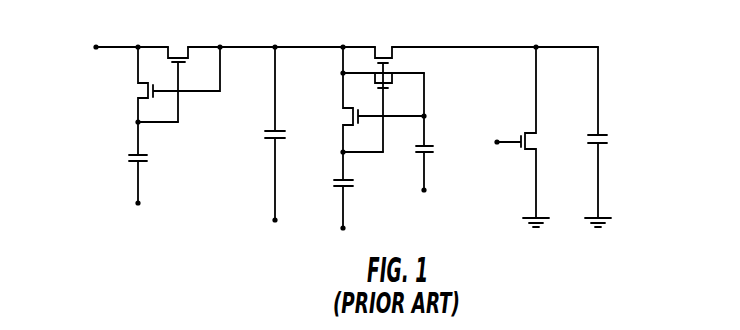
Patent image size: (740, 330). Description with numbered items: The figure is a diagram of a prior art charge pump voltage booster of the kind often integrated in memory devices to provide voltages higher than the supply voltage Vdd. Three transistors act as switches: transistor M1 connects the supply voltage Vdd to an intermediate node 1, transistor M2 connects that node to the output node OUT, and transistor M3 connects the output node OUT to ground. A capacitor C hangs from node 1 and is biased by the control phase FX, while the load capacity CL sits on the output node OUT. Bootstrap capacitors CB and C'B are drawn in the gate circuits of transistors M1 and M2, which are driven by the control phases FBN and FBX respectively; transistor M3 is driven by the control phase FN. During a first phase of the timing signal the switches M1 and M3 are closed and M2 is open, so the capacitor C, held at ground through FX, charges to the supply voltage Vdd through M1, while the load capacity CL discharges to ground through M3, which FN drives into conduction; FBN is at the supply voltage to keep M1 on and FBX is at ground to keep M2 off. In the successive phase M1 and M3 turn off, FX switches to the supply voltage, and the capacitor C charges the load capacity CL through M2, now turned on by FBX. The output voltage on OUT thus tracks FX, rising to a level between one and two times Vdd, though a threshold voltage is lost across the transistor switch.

The supply voltage Vdd is at (78, 37).
The transistor M1 is at (178, 73).
The transistor M2 is at (383, 88).
The transistor M3 is at (532, 137).
The bootstrap capacitor CB is at (251, 175).
The second bootstrap capacitor C'B is at (437, 156).
The capacitor C is at (284, 167).
The load capacity CL is at (609, 137).
The intermediate node 1 is at (280, 76).
The output voltage node OUT is at (550, 36).
The control phase FBN is at (119, 212).
The control phase FX is at (263, 232).
The control phase FBX is at (327, 238).
The control phase FN is at (448, 176).